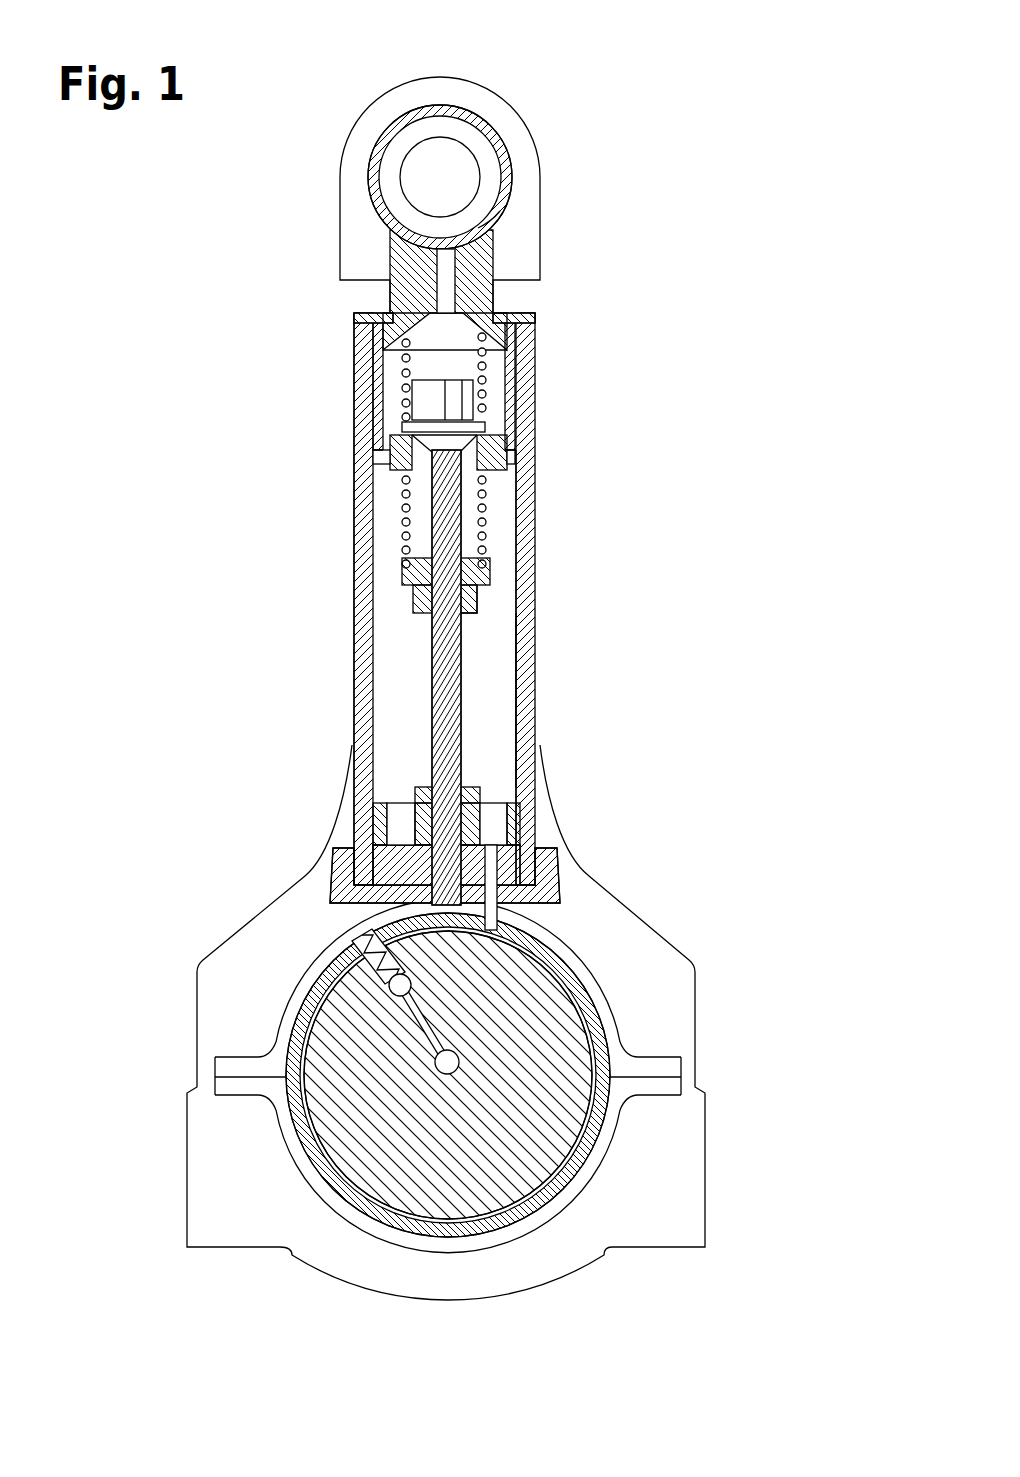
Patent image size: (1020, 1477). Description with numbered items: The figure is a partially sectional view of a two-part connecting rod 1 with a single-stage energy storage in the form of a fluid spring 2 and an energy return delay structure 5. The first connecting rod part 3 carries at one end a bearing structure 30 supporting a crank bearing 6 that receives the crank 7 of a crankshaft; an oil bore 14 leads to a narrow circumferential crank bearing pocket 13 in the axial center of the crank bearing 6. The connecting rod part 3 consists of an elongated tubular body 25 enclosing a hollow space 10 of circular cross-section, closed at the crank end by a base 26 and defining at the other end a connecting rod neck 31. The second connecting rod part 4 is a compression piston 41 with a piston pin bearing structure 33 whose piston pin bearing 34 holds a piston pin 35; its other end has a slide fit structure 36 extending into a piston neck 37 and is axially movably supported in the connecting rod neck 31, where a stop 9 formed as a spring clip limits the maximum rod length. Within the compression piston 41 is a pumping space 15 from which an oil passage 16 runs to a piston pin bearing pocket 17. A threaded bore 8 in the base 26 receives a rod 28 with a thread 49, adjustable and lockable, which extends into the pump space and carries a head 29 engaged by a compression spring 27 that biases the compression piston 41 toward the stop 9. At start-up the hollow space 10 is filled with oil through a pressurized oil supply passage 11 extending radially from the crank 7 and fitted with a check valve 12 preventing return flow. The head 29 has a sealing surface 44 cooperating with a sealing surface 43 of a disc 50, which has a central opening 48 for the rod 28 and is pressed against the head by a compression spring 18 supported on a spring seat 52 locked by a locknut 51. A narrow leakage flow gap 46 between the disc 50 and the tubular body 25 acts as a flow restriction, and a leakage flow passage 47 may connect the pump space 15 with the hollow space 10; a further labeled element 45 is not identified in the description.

The connecting rod 1 is at (327, 698).
The fluid spring 2 is at (560, 650).
The first connecting rod part 3 is at (278, 870).
The second connecting rod part 4 is at (366, 88).
The delay structure 5 is at (325, 450).
The crank bearing 6 is at (603, 1037).
The crank 7 is at (503, 1203).
The threaded bore 8 is at (523, 910).
The stop 9 is at (497, 318).
The hollow space 10 is at (497, 672).
The pressurized oil supply passage 11 is at (420, 1025).
The check valve 12 is at (393, 990).
The crank bearing pocket 13 is at (385, 975).
The oil bore 14 is at (490, 922).
The pumping space 15 is at (390, 420).
The oil passage 16 is at (443, 270).
The piston pin bearing pocket 17 is at (500, 222).
The compression spring 18 is at (487, 540).
The elongated tubular body 25 is at (357, 730).
The base 26 is at (352, 855).
The compression spring 27 is at (403, 358).
The rod 28 is at (430, 537).
The head 29 is at (508, 400).
The bearing structure 30 is at (647, 998).
The connecting rod neck 31 is at (353, 318).
The piston pin bearing structure 33 is at (355, 172).
The piston pin bearing 34 is at (493, 140).
The piston pin 35 is at (432, 128).
The slide fit structure 36 is at (363, 387).
The piston neck 37 is at (483, 317).
The compression piston 41 is at (457, 403).
The sealing surface 43 is at (487, 430).
The sealing surface 44 is at (487, 480).
The valve seat 45 is at (493, 478).
The leakage flow gap 46 is at (505, 462).
The leakage flow passage 47 is at (395, 470).
The central opening 48 is at (407, 482).
The thread 49 is at (450, 720).
The disc 50 is at (490, 453).
The locknut 51 is at (478, 595).
The spring seat 52 is at (407, 577).